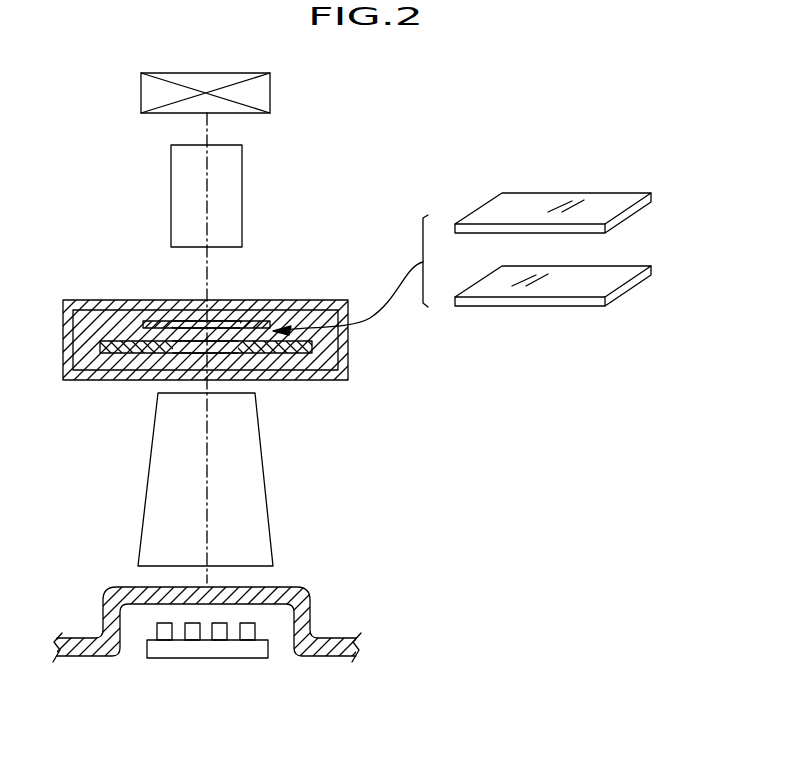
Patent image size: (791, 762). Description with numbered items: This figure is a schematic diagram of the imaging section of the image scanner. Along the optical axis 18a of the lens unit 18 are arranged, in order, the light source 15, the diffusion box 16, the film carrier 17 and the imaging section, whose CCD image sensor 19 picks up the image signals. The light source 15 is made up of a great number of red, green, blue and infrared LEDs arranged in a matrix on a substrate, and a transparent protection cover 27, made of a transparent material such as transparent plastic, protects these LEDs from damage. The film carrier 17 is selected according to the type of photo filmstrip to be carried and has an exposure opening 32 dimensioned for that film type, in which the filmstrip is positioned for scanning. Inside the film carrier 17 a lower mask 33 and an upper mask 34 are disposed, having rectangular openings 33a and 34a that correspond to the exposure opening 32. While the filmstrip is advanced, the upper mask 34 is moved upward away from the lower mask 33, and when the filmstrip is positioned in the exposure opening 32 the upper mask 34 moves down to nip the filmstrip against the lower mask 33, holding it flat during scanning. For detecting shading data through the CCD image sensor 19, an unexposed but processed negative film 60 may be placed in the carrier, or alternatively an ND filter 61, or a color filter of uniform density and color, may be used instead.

The CCD image sensor 19 is at (270, 93).
The lens unit 18 is at (170, 193).
The optical axis 18a is at (208, 262).
The exposure opening 32 is at (170, 375).
The film carrier 17 is at (305, 373).
The upper mask 34 is at (147, 323).
The rectangular opening 34a is at (195, 325).
The lower mask 33 is at (112, 348).
The rectangular opening 33a is at (225, 348).
The diffusion box 16 is at (263, 505).
The transparent protection cover 27 is at (288, 585).
The light source 15 is at (268, 657).
The unexposed but processed negative film 60 is at (627, 217).
The ND filter 61 is at (627, 290).